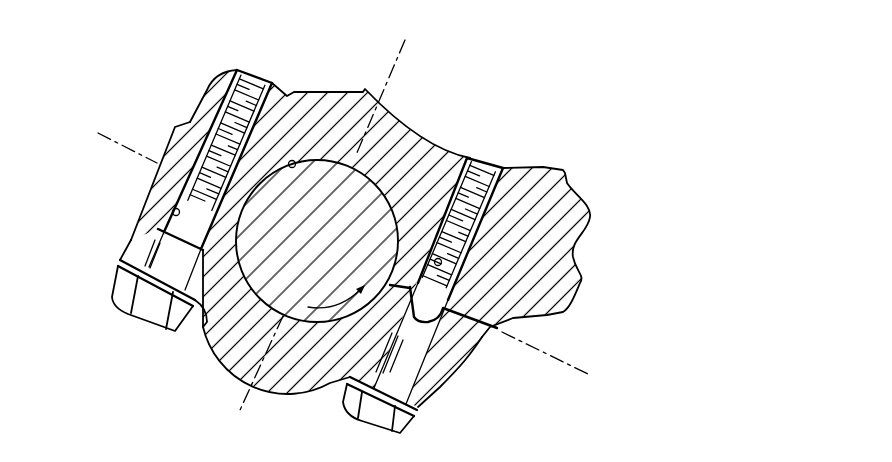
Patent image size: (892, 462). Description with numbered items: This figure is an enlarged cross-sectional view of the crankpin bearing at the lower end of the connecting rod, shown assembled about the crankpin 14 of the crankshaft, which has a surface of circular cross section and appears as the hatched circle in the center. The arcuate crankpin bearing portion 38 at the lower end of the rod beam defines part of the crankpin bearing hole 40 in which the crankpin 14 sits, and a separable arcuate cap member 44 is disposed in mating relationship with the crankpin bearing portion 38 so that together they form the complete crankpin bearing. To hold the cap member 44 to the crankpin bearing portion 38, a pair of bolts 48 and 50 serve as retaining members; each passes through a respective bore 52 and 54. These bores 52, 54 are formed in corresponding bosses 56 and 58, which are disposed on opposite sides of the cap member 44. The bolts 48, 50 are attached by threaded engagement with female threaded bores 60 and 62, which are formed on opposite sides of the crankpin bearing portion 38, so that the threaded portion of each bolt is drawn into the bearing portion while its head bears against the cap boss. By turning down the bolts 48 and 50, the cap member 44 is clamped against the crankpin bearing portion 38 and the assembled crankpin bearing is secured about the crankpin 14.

The crankpin 14 is at (387, 212).
The crankpin bearing portion 38 is at (215, 94).
The crankpin bearing hole 40 is at (293, 163).
The cap member 44 is at (213, 336).
The bolt 48 is at (402, 427).
The bolt 50 is at (146, 316).
The bore 52 is at (461, 366).
The bore 54 is at (173, 211).
The boss 56 is at (428, 386).
The boss 58 is at (132, 258).
The female threaded bore 60 is at (490, 176).
The female threaded bore 62 is at (238, 78).